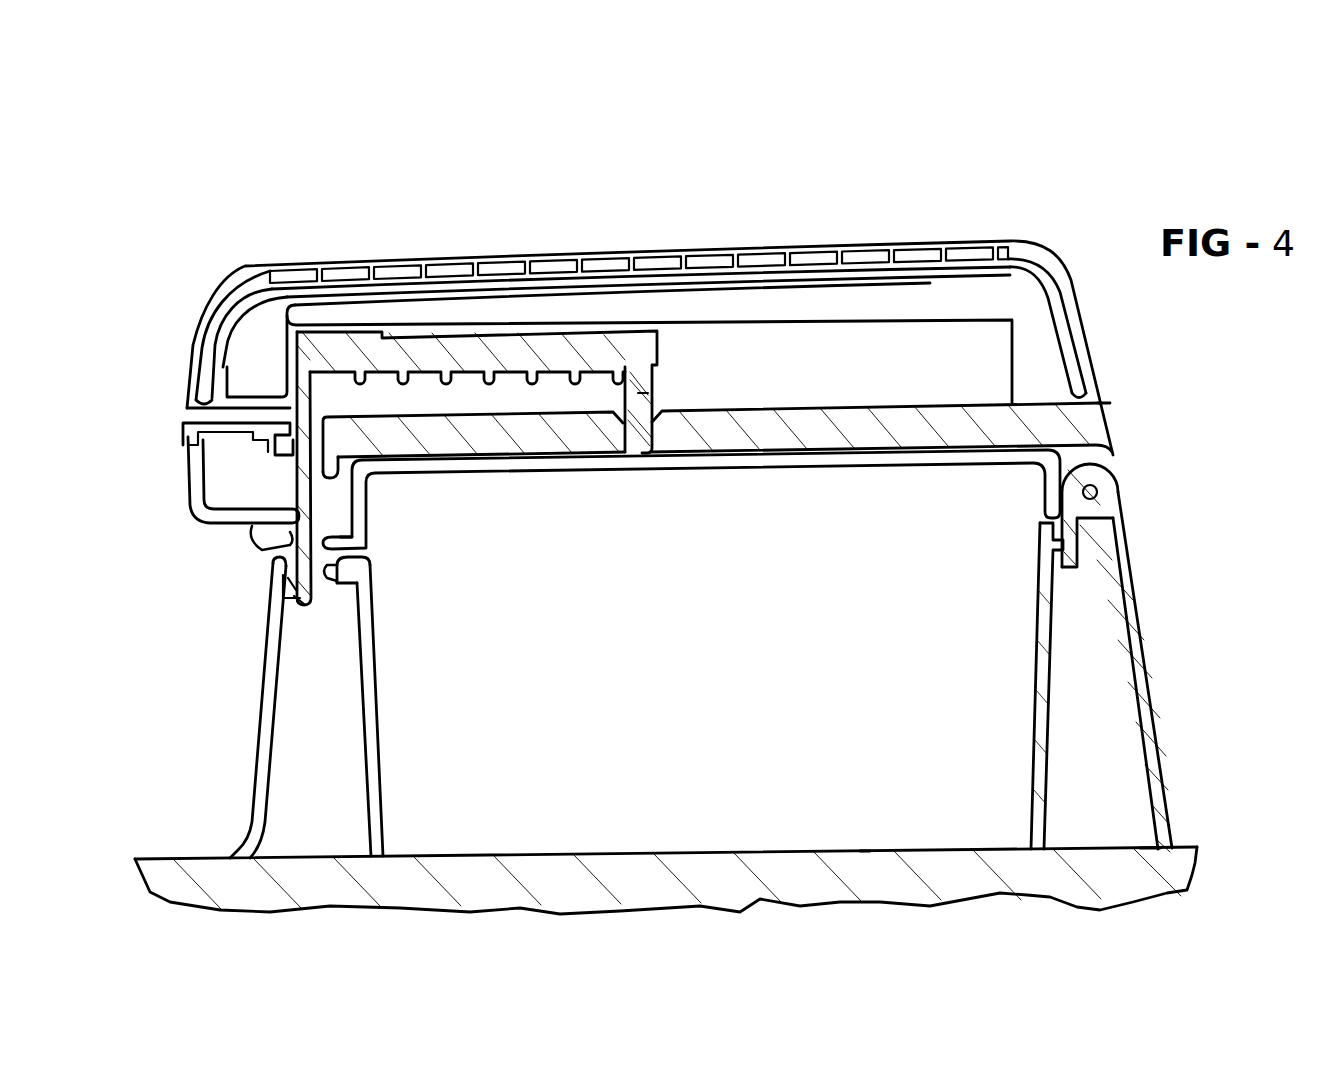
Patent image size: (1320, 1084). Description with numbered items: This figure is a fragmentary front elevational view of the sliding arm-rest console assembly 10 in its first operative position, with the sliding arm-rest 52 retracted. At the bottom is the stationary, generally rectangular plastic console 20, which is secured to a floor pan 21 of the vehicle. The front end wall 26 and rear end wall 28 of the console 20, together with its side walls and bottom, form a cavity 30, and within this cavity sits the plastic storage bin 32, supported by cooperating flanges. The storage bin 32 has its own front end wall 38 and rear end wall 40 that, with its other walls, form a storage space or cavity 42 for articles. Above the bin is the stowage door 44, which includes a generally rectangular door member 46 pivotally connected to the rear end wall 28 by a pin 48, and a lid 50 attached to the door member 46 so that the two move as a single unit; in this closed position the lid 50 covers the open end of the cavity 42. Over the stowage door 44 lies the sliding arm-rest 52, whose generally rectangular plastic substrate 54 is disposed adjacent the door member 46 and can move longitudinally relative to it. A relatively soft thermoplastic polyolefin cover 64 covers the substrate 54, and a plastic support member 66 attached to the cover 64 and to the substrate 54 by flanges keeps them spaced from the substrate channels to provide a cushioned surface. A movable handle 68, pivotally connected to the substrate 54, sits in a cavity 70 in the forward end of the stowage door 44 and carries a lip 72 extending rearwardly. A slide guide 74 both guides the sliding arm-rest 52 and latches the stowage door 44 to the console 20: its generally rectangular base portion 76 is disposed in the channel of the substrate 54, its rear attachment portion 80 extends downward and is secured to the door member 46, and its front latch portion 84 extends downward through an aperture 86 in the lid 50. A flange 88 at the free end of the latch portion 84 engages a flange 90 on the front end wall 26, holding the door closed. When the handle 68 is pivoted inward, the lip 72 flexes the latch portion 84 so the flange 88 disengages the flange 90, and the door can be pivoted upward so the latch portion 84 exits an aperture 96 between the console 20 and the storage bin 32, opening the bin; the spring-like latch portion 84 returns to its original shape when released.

The sliding arm-rest console assembly 10 is at (275, 176).
The console 20 is at (1152, 706).
The floor pan 21 is at (950, 878).
The front end wall 26 is at (267, 680).
The rear end wall 28 is at (1140, 652).
The cavity 30 is at (1085, 636).
The storage bin 32 is at (1048, 798).
The front end wall 38 is at (345, 740).
The rear end wall 40 is at (1046, 747).
The storage space or cavity 42 is at (866, 770).
The stowage door 44 is at (1112, 403).
The door member 46 is at (1090, 430).
The pin 48 is at (1097, 494).
The lid 50 is at (1048, 485).
The sliding arm-rest 52 is at (936, 240).
The substrate 54 is at (1030, 352).
The cover 64 is at (262, 272).
The support member 66 is at (386, 280).
The movable handle 68 is at (186, 487).
The cavity 70 is at (200, 463).
The lip 72 is at (277, 553).
The slide guide 74 is at (660, 345).
The base portion 76 is at (510, 352).
The rear attachment portion 80 is at (642, 393).
The front latch portion 84 is at (287, 478).
The aperture 86 is at (350, 541).
The flange 88 is at (292, 597).
The flange 90 is at (290, 577).
The aperture 96 is at (362, 574).